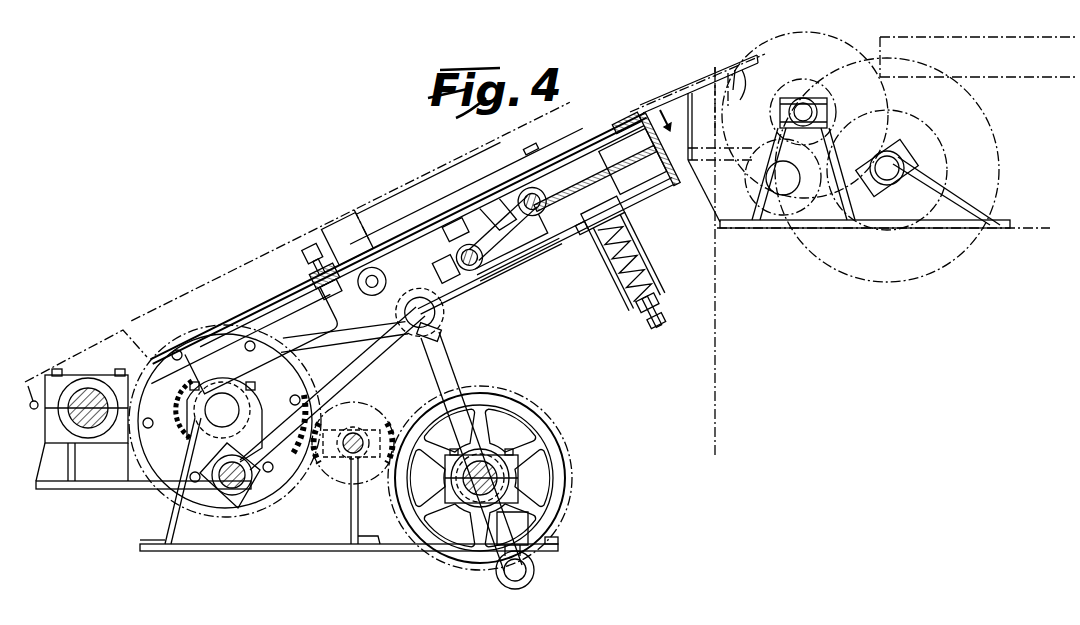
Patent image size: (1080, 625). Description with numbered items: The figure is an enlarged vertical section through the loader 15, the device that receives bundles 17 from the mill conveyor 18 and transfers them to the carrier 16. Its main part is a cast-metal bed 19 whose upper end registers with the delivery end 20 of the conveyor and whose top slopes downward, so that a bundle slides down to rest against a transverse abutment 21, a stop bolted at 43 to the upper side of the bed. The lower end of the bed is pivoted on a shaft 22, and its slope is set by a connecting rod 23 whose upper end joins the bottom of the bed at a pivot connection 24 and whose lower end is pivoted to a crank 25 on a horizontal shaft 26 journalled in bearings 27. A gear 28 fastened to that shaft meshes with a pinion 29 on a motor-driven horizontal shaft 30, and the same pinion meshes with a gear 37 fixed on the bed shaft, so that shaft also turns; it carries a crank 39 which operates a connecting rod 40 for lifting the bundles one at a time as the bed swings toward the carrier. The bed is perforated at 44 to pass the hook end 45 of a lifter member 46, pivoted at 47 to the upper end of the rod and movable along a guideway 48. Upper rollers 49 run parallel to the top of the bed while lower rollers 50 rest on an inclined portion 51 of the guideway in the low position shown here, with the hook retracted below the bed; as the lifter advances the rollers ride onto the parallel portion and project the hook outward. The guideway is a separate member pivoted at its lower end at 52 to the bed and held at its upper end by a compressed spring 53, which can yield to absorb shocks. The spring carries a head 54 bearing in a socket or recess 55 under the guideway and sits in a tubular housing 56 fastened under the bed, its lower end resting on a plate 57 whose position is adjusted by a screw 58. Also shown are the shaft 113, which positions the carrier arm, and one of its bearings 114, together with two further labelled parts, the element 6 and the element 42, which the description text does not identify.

The hopper 6 is at (390, 261).
The loader 15 is at (300, 303).
The carrier 16 is at (674, 123).
The bundles 17 is at (540, 129).
The conveyor 18 is at (725, 62).
The bed 19 is at (596, 143).
The delivery end 20 is at (634, 121).
The transverse abutment 21 is at (322, 282).
The shaft 22 is at (190, 425).
The connecting rod 23 is at (452, 371).
The pivot connection 24 is at (437, 313).
The crank 25 is at (537, 560).
The horizontal shaft 26 is at (455, 490).
The bearings 27 is at (520, 456).
The gear 28 is at (572, 460).
The pinion 29 is at (338, 474).
The horizontal shaft 30 is at (356, 440).
The gear 37 is at (208, 495).
The crank 39 is at (195, 440).
The connecting rod 40 is at (374, 354).
The cover plate 42 is at (506, 146).
The bolt 43 is at (311, 242).
The perforation 44 is at (481, 199).
The hook end 45 is at (466, 246).
The lifter member 46 is at (503, 212).
The pivot 47 is at (508, 263).
The guideway 48 is at (637, 161).
The upper rollers 49 is at (546, 201).
The lower rollers 50 is at (451, 262).
The inclined portion 51 is at (503, 255).
The pivot connection 52 is at (372, 293).
The spring 53 is at (641, 239).
The head 54 is at (571, 226).
The socket or recess 55 is at (596, 185).
The tubular housing 56 is at (618, 265).
The plate 57 is at (660, 291).
The screw 58 is at (660, 309).
The shaft 113 is at (93, 400).
The bearing 114 is at (50, 462).